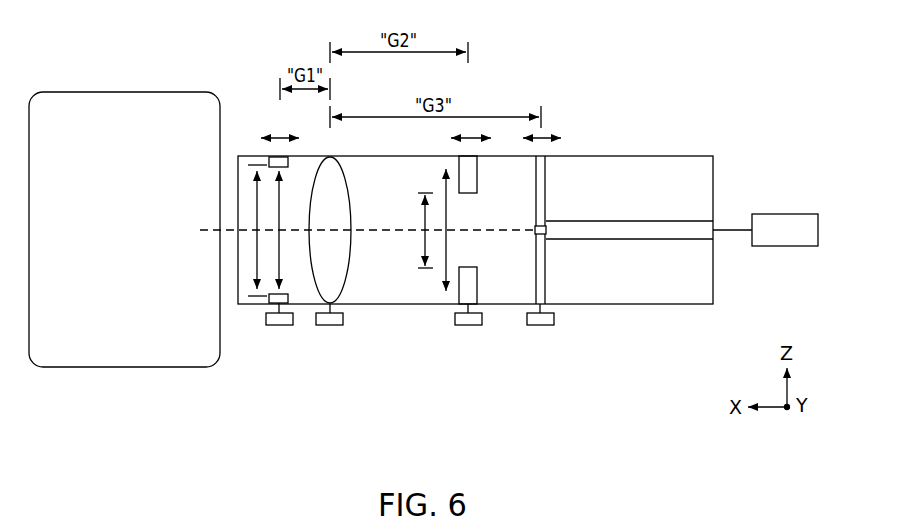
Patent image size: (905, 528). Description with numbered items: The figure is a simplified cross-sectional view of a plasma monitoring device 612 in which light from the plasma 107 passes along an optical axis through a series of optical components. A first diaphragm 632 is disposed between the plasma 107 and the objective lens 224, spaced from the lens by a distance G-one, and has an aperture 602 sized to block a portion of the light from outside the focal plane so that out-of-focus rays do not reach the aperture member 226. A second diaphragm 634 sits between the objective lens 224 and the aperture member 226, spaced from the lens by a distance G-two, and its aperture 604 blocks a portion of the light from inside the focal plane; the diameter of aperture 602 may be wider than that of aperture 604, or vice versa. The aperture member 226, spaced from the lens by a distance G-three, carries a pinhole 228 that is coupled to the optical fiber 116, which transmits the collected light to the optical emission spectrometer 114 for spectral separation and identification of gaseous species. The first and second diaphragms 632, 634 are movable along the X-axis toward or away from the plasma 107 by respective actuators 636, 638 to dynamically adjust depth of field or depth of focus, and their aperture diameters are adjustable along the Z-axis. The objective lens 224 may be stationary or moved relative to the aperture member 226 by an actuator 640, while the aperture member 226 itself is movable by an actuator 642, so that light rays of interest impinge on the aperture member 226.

The plasma 107 is at (148, 92).
The plasma monitoring device 612 is at (512, 80).
The aperture 602 is at (256, 262).
The objective lens 224 is at (343, 172).
The aperture 604 is at (424, 243).
The second diaphragm 634 is at (477, 283).
The aperture member 226 is at (548, 176).
The pinhole 228 is at (534, 229).
The optical fiber 116 is at (655, 241).
The optical emission spectrometer 114 is at (783, 213).
The first diaphragm 632 is at (289, 298).
The actuator 636 is at (272, 326).
The actuator 640 is at (332, 326).
The actuator 638 is at (464, 326).
The actuator 642 is at (545, 326).